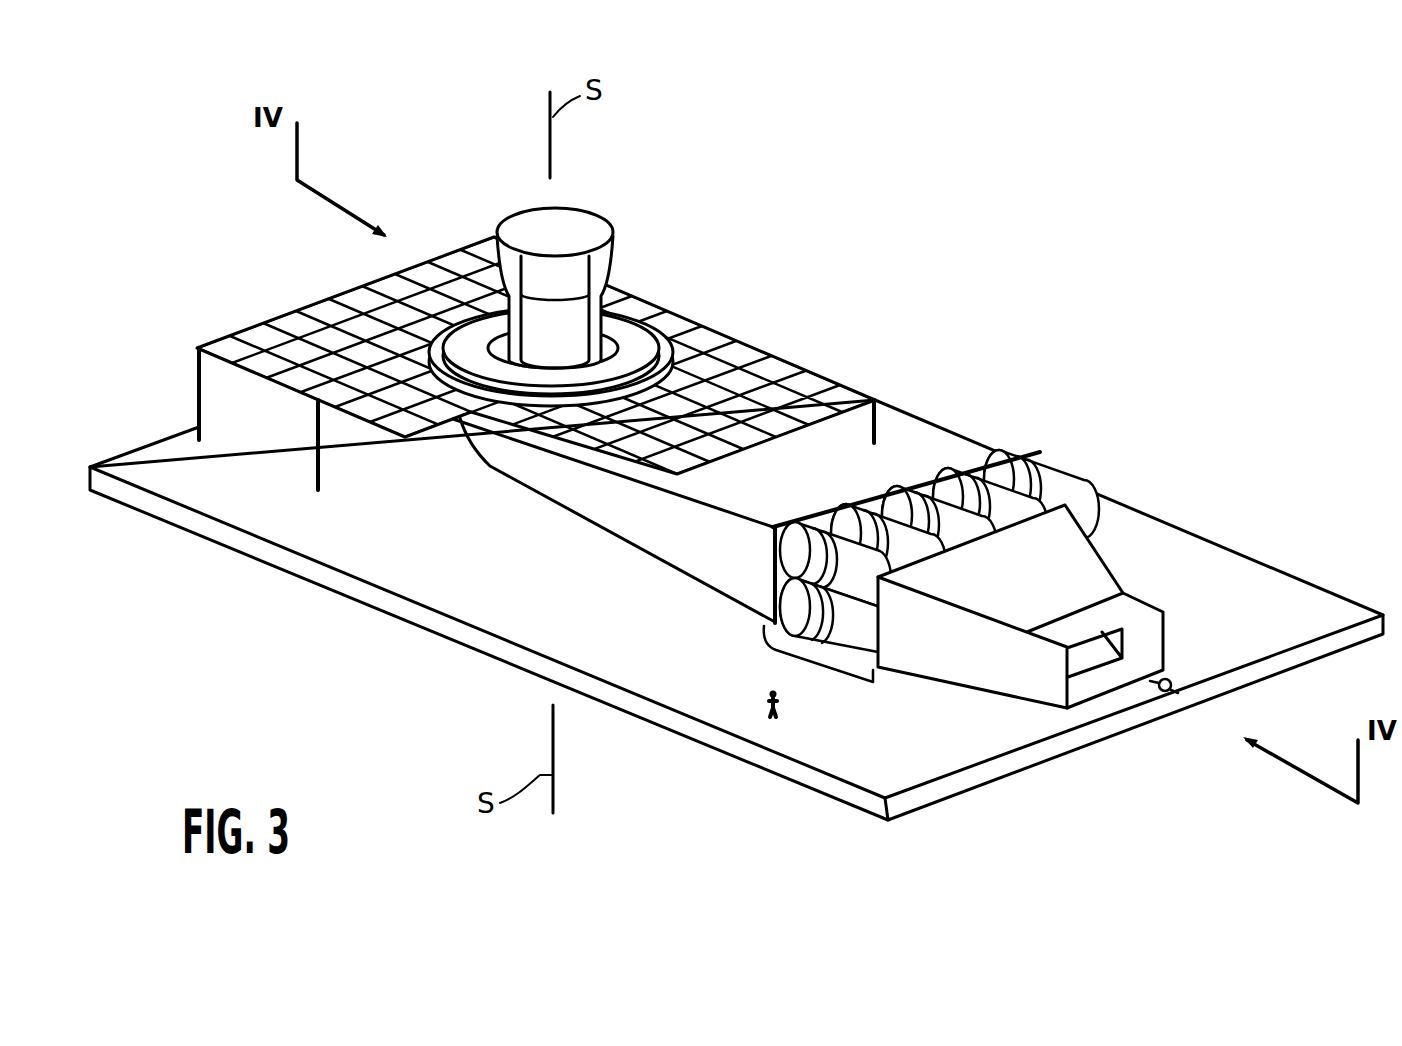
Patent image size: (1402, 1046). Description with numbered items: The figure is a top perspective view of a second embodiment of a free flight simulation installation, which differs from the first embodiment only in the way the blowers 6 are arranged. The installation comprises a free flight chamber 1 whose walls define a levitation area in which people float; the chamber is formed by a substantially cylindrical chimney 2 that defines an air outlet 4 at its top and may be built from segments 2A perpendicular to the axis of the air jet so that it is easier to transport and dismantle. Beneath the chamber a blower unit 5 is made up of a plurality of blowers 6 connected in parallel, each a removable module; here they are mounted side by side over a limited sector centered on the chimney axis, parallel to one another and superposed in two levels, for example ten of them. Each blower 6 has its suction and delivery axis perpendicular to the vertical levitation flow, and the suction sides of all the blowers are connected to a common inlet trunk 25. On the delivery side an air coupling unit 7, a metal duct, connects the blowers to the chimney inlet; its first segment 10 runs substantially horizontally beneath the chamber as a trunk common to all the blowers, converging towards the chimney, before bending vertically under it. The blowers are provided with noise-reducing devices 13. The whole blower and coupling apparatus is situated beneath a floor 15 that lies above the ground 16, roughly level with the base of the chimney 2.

The free flight chamber 1 is at (578, 242).
The chimney 2 is at (570, 343).
The segments 2A is at (580, 272).
The air outlet 4 is at (509, 224).
The blower unit 5 is at (808, 661).
The blowers 6 is at (1000, 497).
The air coupling unit 7 is at (936, 507).
The first segment 10 is at (612, 497).
The noise-reducing device 13 is at (773, 601).
The floor 15 is at (773, 370).
The ground 16 is at (177, 475).
The common inlet trunk 25 is at (1077, 577).